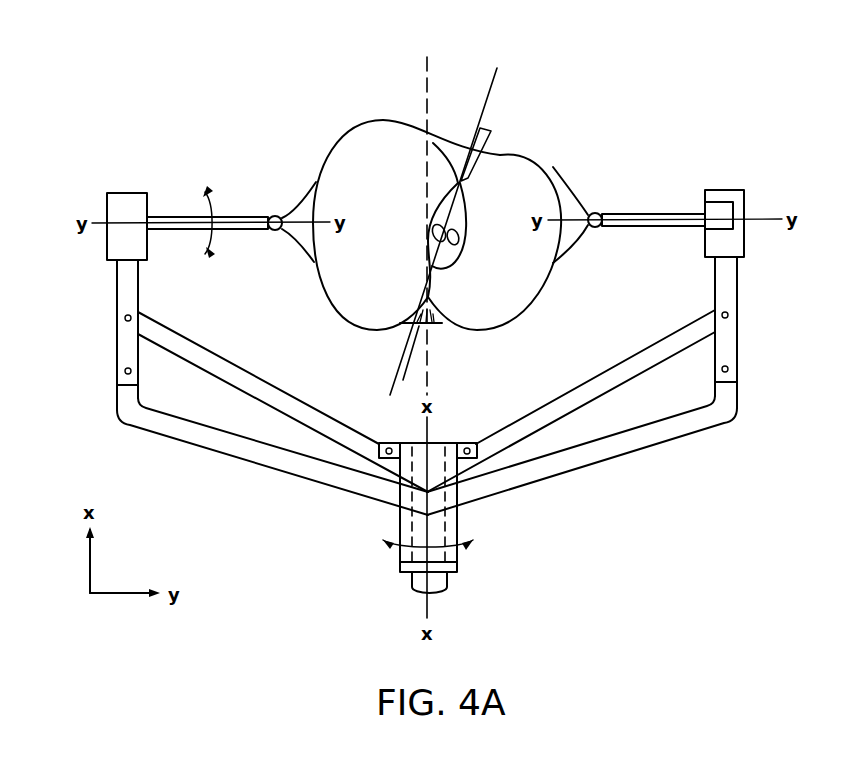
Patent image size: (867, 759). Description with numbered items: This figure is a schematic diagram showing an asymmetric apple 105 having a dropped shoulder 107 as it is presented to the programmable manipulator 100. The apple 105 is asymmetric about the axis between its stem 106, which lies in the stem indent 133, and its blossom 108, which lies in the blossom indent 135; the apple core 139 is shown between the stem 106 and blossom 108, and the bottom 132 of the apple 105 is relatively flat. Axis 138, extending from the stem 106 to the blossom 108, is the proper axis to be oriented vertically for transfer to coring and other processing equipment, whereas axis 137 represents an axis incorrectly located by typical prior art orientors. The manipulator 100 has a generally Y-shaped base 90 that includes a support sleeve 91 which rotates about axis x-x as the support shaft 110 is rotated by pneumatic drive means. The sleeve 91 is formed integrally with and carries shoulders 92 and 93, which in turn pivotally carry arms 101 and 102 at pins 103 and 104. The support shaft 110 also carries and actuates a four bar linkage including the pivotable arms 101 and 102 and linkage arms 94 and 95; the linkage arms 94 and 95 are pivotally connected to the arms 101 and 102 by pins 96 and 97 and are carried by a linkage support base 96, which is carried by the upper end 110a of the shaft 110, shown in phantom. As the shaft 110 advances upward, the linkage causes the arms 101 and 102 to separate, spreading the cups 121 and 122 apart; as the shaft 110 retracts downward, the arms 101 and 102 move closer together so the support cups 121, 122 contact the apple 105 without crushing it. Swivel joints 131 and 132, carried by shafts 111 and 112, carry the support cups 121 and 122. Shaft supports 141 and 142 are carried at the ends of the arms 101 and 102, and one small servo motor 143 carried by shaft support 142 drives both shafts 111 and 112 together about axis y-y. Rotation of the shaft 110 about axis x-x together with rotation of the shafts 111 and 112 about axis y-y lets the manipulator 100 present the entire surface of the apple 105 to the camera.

The Y-shaped base 90 is at (482, 528).
The support sleeve 91 is at (395, 530).
The shoulder 92 is at (233, 453).
The shoulder 93 is at (680, 436).
The linkage arm 94 is at (248, 363).
The linkage arm 95 is at (652, 337).
The pin / linkage support base 96 is at (138, 312).
The pin 97 is at (720, 310).
The programmable manipulator 100 is at (682, 153).
The pivotable arm 101 is at (108, 289).
The pivotable arm 102 is at (750, 280).
The pin 103 is at (124, 370).
The pin 104 is at (730, 367).
The apple 105 is at (449, 125).
The stem 106 is at (489, 127).
The dropped shoulder 107 is at (558, 154).
The blossom 108 is at (437, 307).
The support shaft 110 is at (466, 584).
The upper end of shaft 110a is at (410, 465).
The shaft 111 is at (173, 230).
The shaft 112 is at (653, 212).
The support cup 121 is at (302, 258).
The support cup 122 is at (570, 183).
The swivel joint 131 is at (278, 231).
The swivel joint / bottom of apple 132 is at (597, 212).
The stem indent 133 is at (498, 153).
The blossom indent 135 is at (398, 360).
The axis 137 is at (410, 70).
The axis 138 is at (508, 77).
The apple core 139 is at (212, 182).
The shaft support 141 is at (125, 192).
The shaft support 142 is at (727, 189).
The servo motor 143 is at (733, 206).